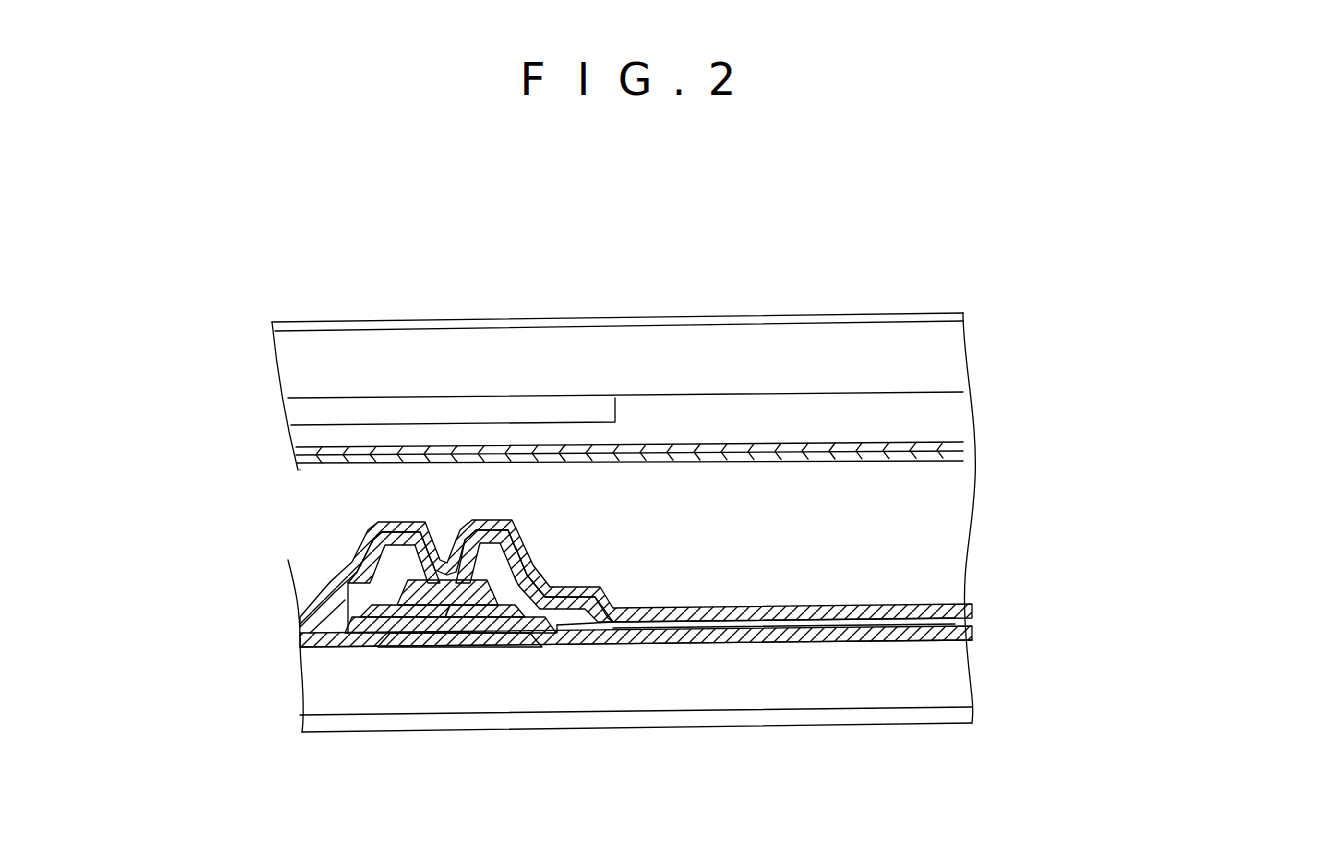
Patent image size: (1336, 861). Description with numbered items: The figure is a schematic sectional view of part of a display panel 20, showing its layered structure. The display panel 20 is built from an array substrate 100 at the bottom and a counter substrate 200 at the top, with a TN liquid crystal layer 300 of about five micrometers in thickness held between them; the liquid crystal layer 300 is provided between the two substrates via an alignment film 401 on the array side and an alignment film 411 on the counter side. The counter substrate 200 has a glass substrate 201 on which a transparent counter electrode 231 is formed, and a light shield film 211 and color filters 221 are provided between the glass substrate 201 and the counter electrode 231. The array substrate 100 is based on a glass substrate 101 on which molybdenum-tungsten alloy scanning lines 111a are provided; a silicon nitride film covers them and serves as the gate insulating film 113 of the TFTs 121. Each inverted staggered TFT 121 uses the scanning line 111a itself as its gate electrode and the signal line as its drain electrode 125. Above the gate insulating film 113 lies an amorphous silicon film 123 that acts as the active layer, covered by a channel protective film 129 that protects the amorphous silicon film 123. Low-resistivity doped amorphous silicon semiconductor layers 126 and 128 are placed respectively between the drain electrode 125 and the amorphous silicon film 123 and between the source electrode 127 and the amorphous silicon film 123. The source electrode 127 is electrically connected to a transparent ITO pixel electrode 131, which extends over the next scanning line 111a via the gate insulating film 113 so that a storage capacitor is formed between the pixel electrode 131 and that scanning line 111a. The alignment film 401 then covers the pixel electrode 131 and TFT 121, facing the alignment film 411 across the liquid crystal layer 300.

The display panel 20 is at (902, 218).
The counter substrate 200 is at (1093, 341).
The glass substrate 201 is at (905, 343).
The light shield film 211 is at (490, 407).
The color filters 221 is at (945, 420).
The counter electrode 231 is at (955, 433).
The alignment film 411 is at (947, 460).
The TN liquid crystal layer 300 is at (1082, 548).
The alignment film 401 is at (945, 603).
The array substrate 100 is at (1073, 643).
The glass substrate 101 is at (947, 685).
The gate insulating film 113 is at (752, 640).
The scanning line 111a is at (440, 638).
The pixel electrode 131 is at (747, 622).
The TFT 121 is at (542, 535).
The drain electrode 125 is at (413, 558).
The source electrode 127 is at (497, 550).
The channel protective film 129 is at (443, 593).
The semiconductor layer 128 is at (543, 572).
The semiconductor layer 126 is at (383, 598).
The amorphous silicon film 123 is at (503, 613).